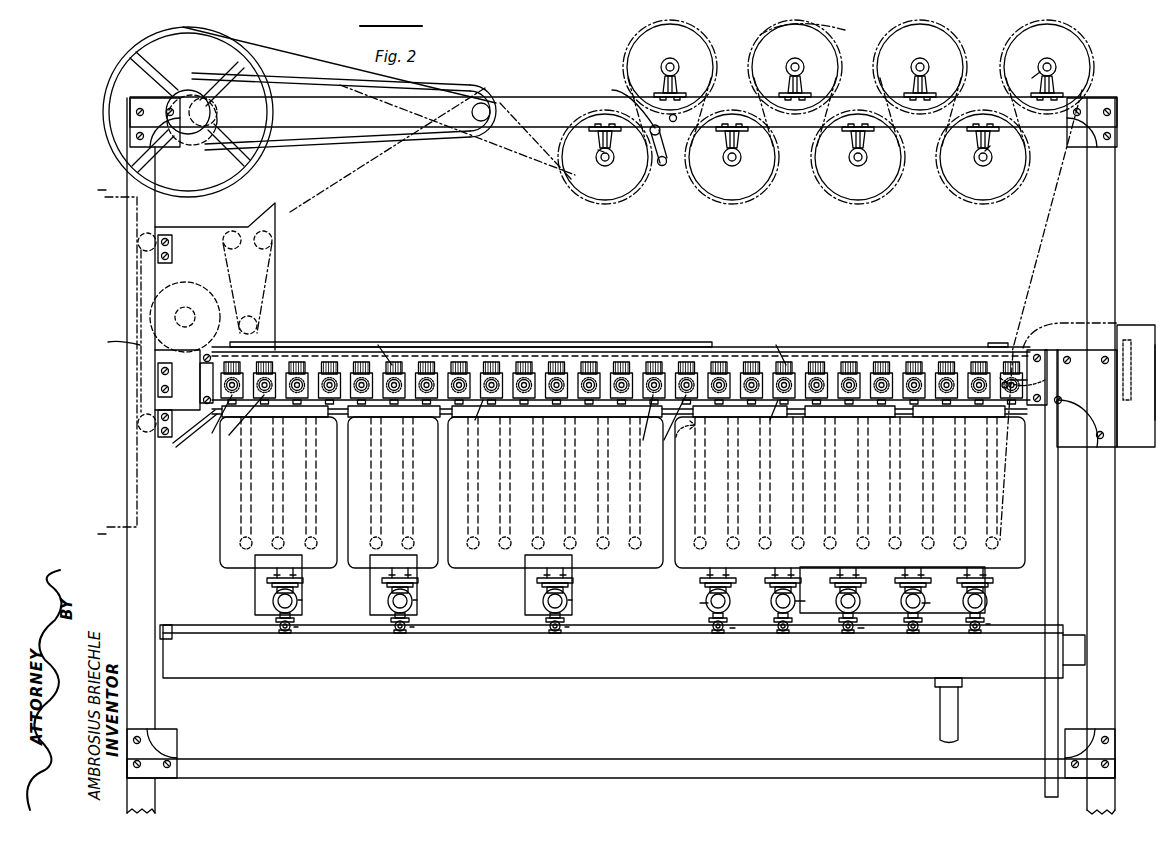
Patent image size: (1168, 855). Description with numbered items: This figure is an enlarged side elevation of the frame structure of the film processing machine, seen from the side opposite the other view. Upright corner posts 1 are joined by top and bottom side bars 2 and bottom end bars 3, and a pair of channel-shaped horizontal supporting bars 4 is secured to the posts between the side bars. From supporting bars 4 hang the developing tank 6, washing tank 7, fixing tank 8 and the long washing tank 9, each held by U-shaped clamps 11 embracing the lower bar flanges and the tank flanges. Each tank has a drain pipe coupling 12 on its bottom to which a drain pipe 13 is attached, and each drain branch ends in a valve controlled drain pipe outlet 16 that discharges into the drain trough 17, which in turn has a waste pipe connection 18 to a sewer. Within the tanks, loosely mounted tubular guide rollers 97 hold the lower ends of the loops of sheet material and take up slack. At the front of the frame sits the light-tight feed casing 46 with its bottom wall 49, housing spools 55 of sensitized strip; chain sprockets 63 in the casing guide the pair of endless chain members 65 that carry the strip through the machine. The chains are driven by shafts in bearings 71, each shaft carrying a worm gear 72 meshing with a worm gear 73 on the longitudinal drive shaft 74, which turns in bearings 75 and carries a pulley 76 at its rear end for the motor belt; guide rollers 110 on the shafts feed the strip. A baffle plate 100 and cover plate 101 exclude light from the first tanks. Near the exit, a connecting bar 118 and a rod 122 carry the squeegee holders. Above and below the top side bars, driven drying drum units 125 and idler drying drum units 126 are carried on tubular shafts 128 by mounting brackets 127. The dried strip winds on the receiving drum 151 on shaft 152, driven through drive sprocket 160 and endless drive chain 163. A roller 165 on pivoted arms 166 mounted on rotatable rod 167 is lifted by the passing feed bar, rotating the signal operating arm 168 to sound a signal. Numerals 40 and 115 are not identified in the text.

The corner posts 1 is at (125, 570).
The top and bottom side bars 2 is at (542, 104).
The bottom end bars 3 is at (111, 367).
The horizontal supporting bars 4 is at (408, 354).
The developing tank 6 is at (218, 554).
The washing tank 7 is at (428, 568).
The fixing tank 8 is at (503, 568).
The washing tank 9 is at (688, 564).
The U-shaped clamps 11 is at (262, 426).
The drain pipe coupling 12 is at (297, 562).
The drain pipe 13 is at (623, 601).
The valve controlled drain pipe outlet 16 is at (650, 621).
The drain trough 17 is at (854, 671).
The waste pipe connection 18 is at (954, 708).
The vertical bar 40 is at (1045, 590).
The feed casing 46 is at (280, 288).
The bottom wall 49 is at (195, 437).
The spools 55 is at (196, 282).
The chain sprockets 63 is at (137, 240).
The endless chain members 65 is at (314, 205).
The bearings 71 is at (629, 422).
The worm gear 72 is at (440, 418).
The worm gear 73 is at (574, 344).
The drive shaft 74 is at (302, 364).
The bearings 75 is at (200, 384).
The pulley 76 is at (1130, 373).
The guide roller 97 is at (263, 545).
The baffle plate 100 is at (680, 436).
The cover plate 101 is at (545, 347).
The guide rollers 110 is at (138, 427).
The cord guide arch 115 is at (1026, 347).
The connecting bar 118 is at (1076, 396).
The rod 122 is at (1015, 367).
The driven drying drum units 125 is at (826, 112).
The idler drying drum units 126 is at (895, 50).
The mounting brackets 127 is at (804, 109).
The tubular shafts 128 is at (661, 67).
The receiving drum 151 is at (105, 99).
The shaft 152 is at (183, 144).
The drive sprocket 160 is at (217, 112).
The endless drive chain 163 is at (302, 90).
The roller 165 is at (665, 164).
The pivoted arms 166 is at (668, 144).
The rotatable rod 167 is at (620, 100).
The signal operating arm 168 is at (678, 125).